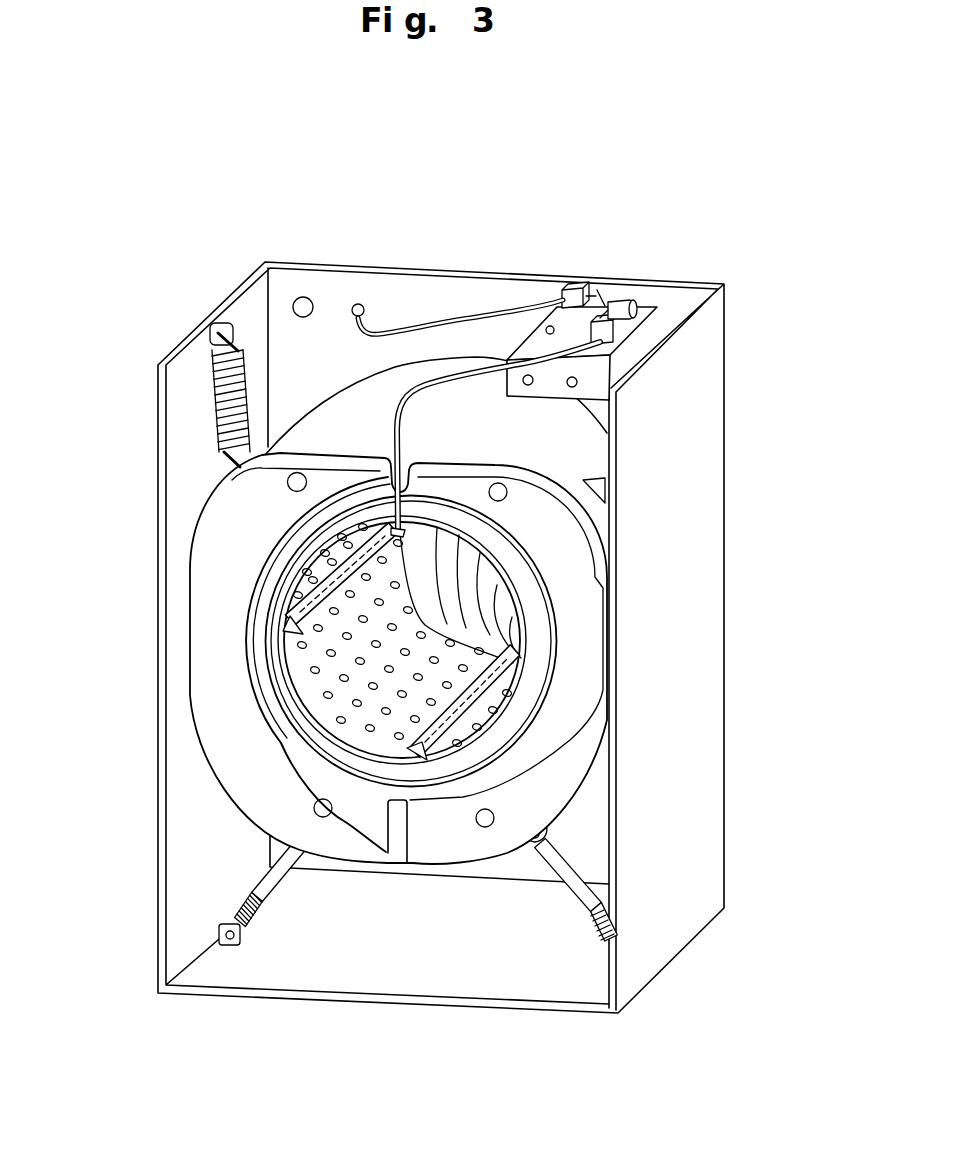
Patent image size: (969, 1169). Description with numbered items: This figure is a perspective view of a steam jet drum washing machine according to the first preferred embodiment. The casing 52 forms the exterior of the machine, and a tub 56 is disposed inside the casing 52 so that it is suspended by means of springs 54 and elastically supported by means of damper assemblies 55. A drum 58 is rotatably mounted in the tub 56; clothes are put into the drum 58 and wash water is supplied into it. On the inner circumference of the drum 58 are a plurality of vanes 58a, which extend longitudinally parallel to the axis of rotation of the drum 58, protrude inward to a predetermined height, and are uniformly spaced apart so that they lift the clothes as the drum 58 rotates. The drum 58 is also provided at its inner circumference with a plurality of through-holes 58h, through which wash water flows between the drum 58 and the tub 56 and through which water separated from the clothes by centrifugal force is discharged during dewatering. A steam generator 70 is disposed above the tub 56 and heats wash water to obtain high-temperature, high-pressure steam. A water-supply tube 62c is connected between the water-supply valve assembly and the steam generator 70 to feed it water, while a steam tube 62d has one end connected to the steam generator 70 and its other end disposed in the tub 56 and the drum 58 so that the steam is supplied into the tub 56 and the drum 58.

The casing 52 is at (722, 545).
The springs 54 is at (213, 412).
The damper assemblies 55 is at (249, 879).
The tub 56 is at (402, 380).
The drum 58 is at (297, 678).
The vanes 58a is at (300, 614).
The through-holes 58h is at (312, 708).
The water-supply tube 62c is at (462, 312).
The steam tube 62d is at (528, 357).
The steam generator 70 is at (631, 342).